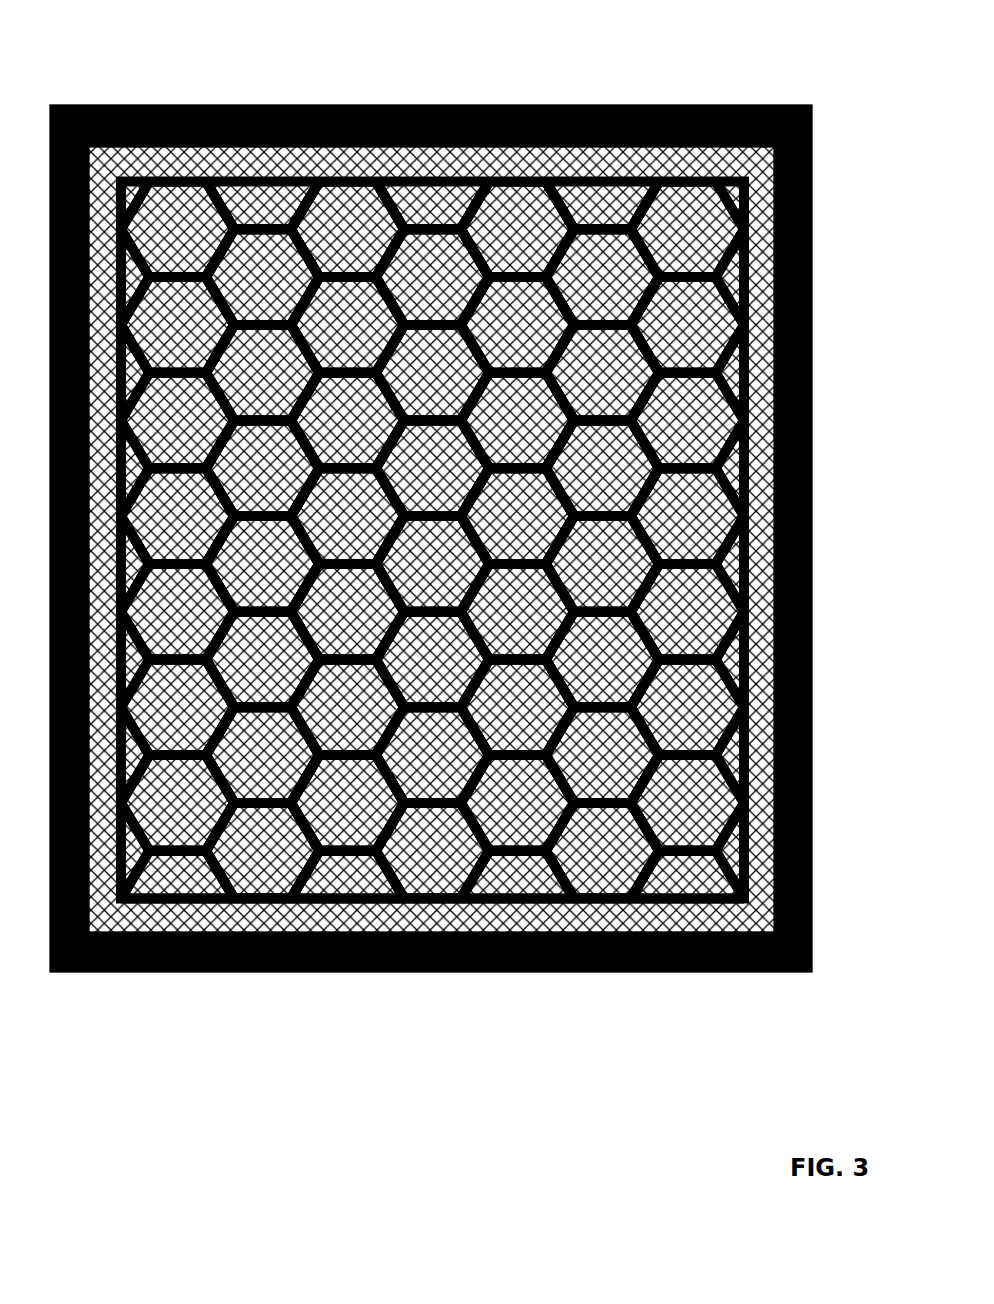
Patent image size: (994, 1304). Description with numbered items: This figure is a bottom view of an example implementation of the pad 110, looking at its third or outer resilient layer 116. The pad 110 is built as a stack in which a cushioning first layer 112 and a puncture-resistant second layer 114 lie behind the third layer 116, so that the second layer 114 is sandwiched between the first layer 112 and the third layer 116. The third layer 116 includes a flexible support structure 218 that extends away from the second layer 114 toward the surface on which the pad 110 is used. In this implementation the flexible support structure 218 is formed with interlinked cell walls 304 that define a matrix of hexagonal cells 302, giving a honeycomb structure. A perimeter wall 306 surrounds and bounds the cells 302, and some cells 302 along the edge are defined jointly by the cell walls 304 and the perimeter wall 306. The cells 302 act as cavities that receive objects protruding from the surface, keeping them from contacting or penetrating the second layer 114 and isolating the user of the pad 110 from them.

The pad 110 is at (150, 50).
The first layer 112 is at (780, 769).
The second layer 114 is at (760, 560).
The third layer 116 is at (115, 413).
The flexible support structure 218 is at (506, 152).
The hexagonal cells 302 is at (329, 719).
The cell walls 304 is at (300, 833).
The perimeter wall 306 is at (607, 902).